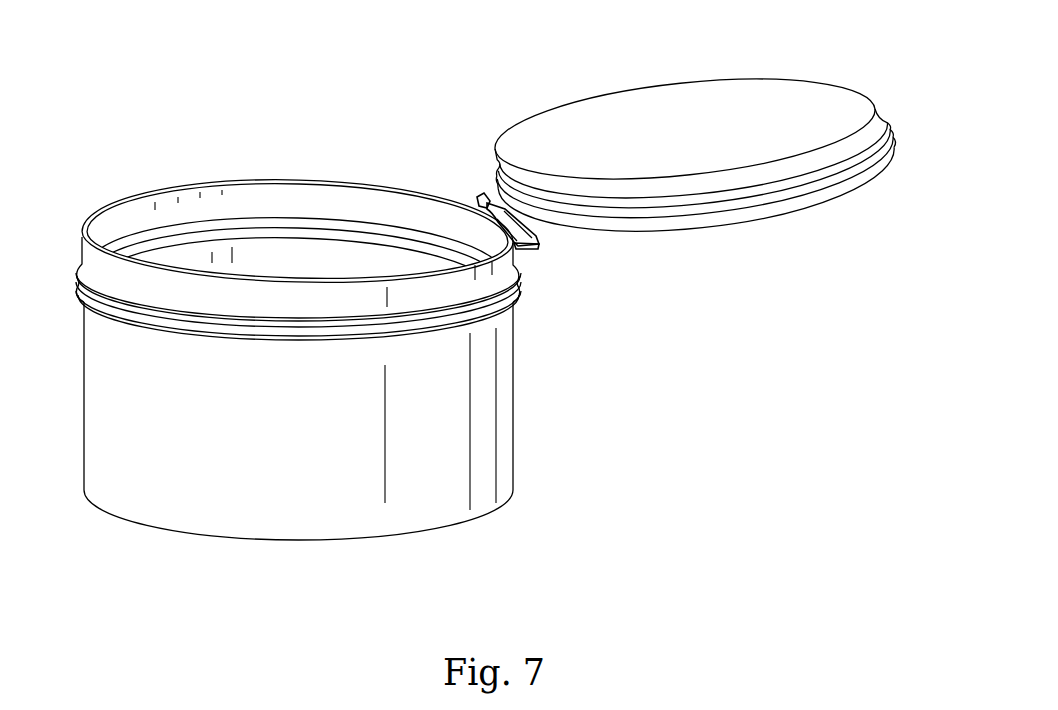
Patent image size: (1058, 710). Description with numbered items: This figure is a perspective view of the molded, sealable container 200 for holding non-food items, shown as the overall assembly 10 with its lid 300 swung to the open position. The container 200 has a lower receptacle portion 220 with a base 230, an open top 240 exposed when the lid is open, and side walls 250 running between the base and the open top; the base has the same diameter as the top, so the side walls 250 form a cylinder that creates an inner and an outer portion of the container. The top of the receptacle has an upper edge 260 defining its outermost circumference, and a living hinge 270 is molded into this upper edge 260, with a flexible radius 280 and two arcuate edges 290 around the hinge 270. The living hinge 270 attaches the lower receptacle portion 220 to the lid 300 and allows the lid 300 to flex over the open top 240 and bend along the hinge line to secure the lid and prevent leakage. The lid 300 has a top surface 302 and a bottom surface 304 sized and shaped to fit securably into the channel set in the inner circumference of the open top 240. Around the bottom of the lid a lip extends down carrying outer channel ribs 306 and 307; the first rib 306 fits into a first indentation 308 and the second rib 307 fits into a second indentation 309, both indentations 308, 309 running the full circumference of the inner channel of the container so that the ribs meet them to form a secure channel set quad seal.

The container assembly 10 is at (597, 364).
The container 200 is at (531, 429).
The lower receptacle portion 220 is at (98, 408).
The base 230 is at (392, 538).
The open top 240 is at (312, 242).
The side walls 250 is at (83, 462).
The upper edge 260 is at (281, 179).
The living hinge 270 is at (540, 242).
The flexible radius 280 is at (543, 249).
The arcuate edges 290 is at (481, 194).
The lid 300 is at (844, 221).
The top surface 302 is at (730, 220).
The bottom surface 304 is at (683, 98).
The outer channel rib 306 is at (888, 148).
The outer channel rib 307 is at (885, 120).
The indentation 308 is at (75, 267).
The indentation 309 is at (75, 290).